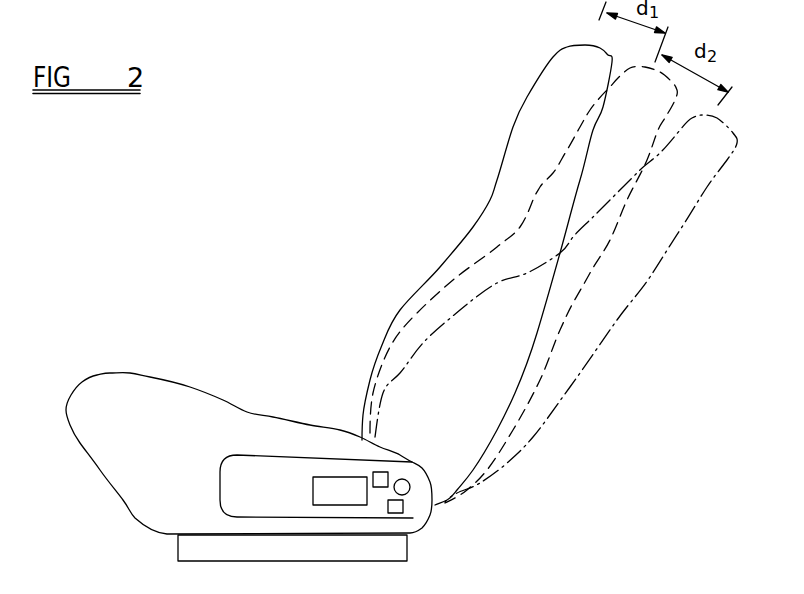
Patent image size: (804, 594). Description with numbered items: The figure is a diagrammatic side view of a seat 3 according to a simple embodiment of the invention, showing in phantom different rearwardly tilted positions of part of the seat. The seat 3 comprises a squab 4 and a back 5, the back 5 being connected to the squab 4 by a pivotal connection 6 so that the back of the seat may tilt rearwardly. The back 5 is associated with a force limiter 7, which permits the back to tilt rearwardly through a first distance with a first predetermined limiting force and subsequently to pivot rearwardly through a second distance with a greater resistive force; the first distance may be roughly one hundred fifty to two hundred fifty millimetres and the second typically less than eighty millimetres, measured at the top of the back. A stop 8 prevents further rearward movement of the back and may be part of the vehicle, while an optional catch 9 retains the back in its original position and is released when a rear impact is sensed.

The seat 3 is at (222, 337).
The squab 4 is at (150, 382).
The back 5 is at (512, 118).
The pivotal connection 6 is at (410, 485).
The force limiter 7 is at (352, 497).
The stop 8 is at (403, 507).
The catch 9 is at (373, 473).